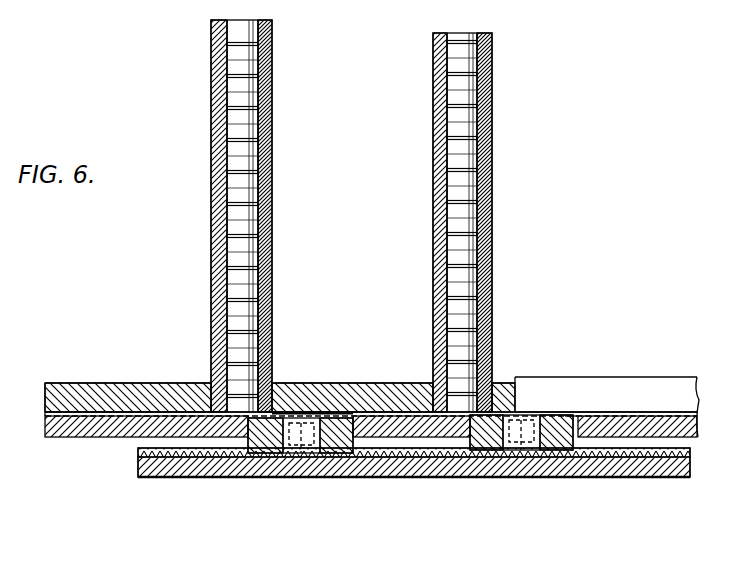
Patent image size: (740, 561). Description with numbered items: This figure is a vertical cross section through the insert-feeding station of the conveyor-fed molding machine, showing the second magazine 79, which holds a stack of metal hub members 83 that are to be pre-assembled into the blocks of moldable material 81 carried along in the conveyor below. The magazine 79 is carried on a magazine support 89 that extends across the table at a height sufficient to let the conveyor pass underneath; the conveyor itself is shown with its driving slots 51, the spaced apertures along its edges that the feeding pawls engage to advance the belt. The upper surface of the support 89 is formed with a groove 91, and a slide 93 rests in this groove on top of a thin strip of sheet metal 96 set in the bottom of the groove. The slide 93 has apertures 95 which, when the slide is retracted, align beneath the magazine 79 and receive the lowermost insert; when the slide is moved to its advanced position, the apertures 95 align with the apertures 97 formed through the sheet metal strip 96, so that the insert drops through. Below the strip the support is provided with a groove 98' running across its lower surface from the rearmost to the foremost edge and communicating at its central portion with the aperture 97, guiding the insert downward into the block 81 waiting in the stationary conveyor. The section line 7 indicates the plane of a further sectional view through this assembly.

The section line 7- 7 is at (287, 12).
The driving slots 51 is at (175, 463).
The second magazine 79 is at (265, 172).
The blocks of moldable material 81 is at (270, 447).
The metal hub member 83 is at (228, 118).
The magazine support 89 is at (630, 378).
The groove 91 is at (538, 395).
The slide 93 is at (128, 397).
The apertures of the slide 95 is at (265, 408).
The thin strips of sheet metal 96 is at (382, 410).
The apertures through the support 97 is at (323, 414).
The groove of the insert magazine support 98' is at (590, 400).